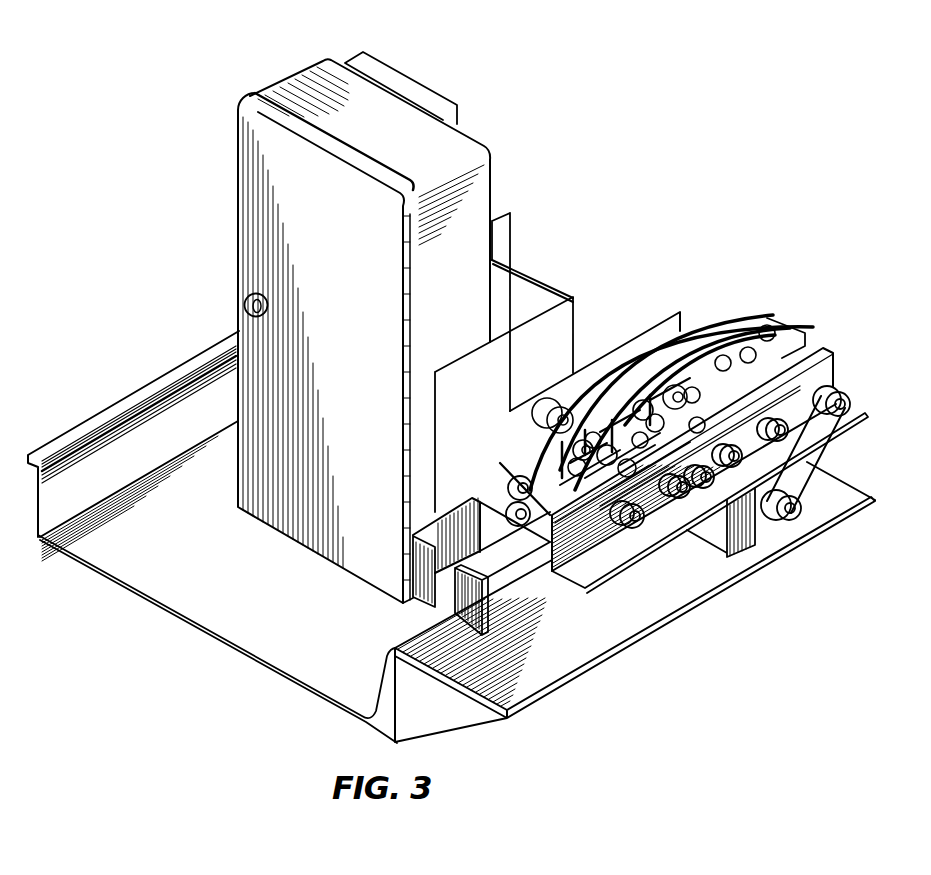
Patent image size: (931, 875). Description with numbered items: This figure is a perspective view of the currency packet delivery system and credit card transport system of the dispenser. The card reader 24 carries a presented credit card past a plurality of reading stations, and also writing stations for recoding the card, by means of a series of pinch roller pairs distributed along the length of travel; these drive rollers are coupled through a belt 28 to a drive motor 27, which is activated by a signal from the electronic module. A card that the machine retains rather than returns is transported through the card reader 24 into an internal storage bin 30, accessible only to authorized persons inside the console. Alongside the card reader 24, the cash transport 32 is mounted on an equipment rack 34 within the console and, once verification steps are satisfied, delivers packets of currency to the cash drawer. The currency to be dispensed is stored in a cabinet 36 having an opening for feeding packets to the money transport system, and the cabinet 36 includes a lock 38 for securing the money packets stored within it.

The card reader 24 is at (836, 351).
The drive motor 27 is at (773, 534).
The belt 28 is at (821, 455).
The internal storage bin 30 is at (541, 594).
The cash transport 32 is at (232, 268).
The equipment rack 34 is at (459, 700).
The cabinet 36 is at (278, 86).
The lock 38 is at (244, 300).